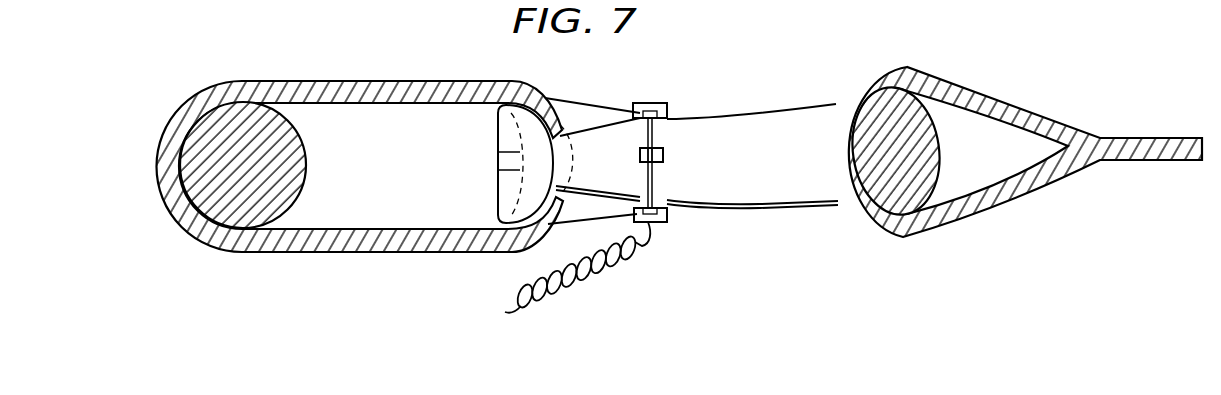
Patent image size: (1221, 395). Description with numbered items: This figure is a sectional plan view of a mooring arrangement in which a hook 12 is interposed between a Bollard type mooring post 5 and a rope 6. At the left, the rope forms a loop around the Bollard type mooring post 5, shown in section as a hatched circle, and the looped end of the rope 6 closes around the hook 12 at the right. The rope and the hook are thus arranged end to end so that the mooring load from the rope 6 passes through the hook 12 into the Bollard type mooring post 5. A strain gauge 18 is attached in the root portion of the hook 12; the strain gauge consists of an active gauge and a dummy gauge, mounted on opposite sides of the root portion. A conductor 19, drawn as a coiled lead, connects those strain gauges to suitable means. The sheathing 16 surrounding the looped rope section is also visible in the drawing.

The Bollard type mooring post 5 is at (238, 122).
The tubular sheath 16 is at (371, 94).
The hook 12 is at (721, 104).
The strain gauge 18 is at (656, 102).
The conductor 19 is at (615, 271).
The rope 6 is at (1000, 100).